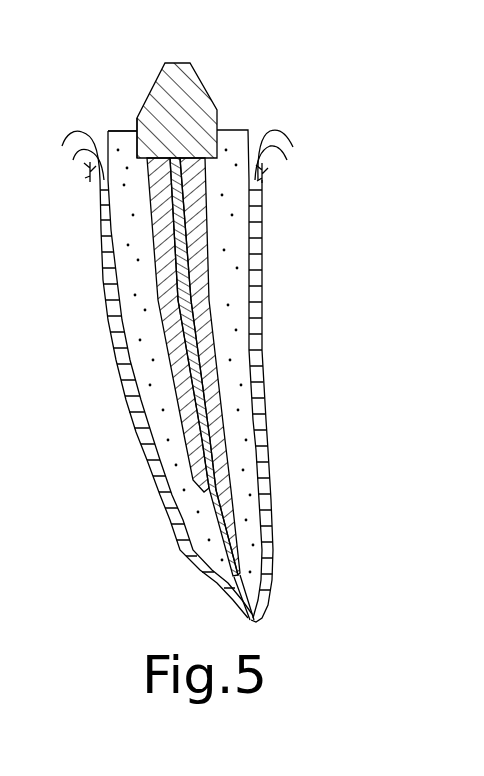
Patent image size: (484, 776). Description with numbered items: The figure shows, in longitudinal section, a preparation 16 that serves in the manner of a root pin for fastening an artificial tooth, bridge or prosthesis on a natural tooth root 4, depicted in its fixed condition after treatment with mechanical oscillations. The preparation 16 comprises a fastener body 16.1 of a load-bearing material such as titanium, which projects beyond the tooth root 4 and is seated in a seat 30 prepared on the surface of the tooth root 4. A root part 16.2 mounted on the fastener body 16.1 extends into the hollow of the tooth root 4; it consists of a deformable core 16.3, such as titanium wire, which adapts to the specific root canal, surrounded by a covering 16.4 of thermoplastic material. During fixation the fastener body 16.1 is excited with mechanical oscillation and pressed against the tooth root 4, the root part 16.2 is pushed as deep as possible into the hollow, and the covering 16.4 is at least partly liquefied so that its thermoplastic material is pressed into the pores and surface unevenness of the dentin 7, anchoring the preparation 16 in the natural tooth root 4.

The tooth root 4 is at (132, 464).
The dentin 7 is at (237, 422).
The preparation 16 is at (245, 113).
The fastener body 16.1 is at (200, 71).
The root part 16.2 is at (232, 297).
The core 16.3 is at (181, 223).
The covering 16.4 is at (160, 292).
The seat 30 is at (122, 130).